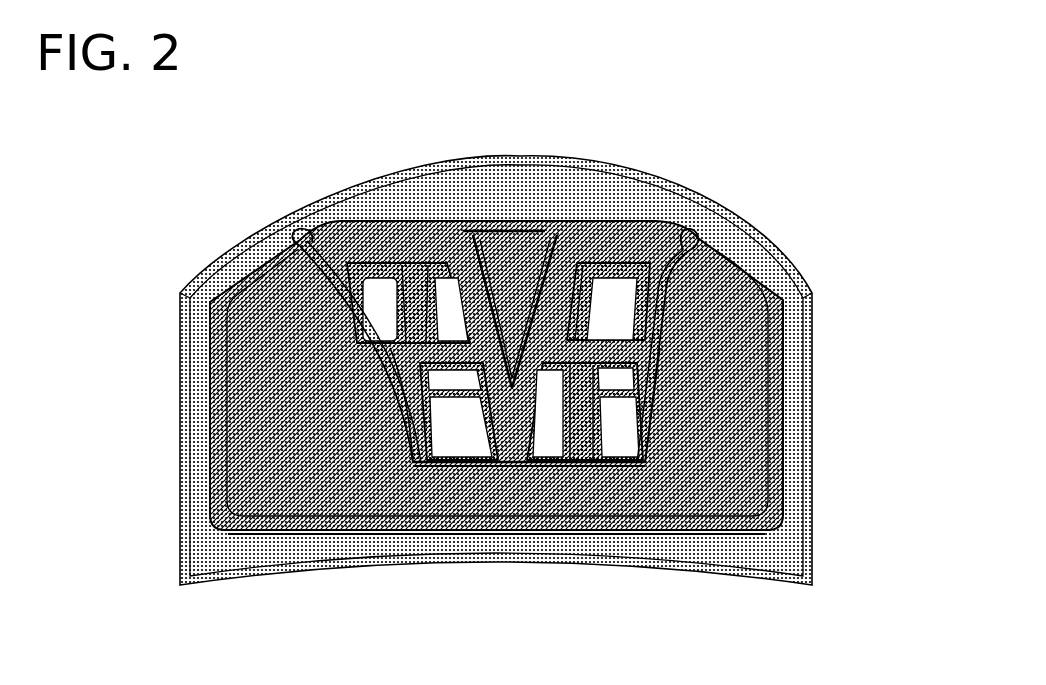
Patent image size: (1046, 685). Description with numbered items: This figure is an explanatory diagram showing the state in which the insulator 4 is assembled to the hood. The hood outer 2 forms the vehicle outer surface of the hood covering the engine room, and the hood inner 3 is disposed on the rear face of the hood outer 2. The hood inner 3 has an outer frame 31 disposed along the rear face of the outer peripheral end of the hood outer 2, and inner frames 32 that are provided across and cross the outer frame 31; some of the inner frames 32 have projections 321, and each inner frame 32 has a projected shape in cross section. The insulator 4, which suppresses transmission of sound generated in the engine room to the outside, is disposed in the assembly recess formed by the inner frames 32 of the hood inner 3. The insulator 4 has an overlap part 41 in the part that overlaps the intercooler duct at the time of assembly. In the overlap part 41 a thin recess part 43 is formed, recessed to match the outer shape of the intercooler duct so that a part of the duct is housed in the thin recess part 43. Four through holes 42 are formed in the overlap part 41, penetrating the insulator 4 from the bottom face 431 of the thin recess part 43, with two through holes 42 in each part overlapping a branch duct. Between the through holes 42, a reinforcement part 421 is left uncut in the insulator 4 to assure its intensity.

The hood outer 2 is at (727, 212).
The hood inner 3 is at (372, 190).
The outer frame 31 is at (590, 185).
The inner frame 32 is at (452, 500).
The projection 321 is at (630, 468).
The insulator 4 is at (700, 480).
The overlap part 41 is at (417, 248).
The through hole 42 is at (392, 290).
The reinforcement part 421 is at (617, 333).
The thin recess part 43 is at (660, 262).
The bottom face 431 is at (583, 238).